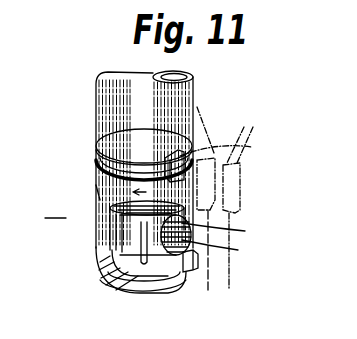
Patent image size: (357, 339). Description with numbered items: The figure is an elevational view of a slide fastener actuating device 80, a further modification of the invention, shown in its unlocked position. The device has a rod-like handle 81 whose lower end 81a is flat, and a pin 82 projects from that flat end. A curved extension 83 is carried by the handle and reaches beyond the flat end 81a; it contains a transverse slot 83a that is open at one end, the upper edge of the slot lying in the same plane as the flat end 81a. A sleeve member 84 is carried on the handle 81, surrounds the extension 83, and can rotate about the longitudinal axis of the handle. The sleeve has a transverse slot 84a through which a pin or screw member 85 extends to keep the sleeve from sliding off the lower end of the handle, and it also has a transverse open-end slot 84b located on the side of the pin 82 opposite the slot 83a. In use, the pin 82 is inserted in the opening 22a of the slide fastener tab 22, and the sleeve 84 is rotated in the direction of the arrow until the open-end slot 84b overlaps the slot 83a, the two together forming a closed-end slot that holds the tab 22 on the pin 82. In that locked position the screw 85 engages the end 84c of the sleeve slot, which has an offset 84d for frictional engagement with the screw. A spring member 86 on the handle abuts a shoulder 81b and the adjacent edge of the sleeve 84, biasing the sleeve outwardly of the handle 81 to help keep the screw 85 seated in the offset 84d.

The slide fastener actuating device 80 is at (55, 209).
The rod-like handle 81 is at (108, 97).
The lower end of the handle 81a is at (110, 230).
The shoulder 81b is at (170, 132).
The pin 82 is at (147, 268).
The curved extension 83 is at (118, 284).
The transverse slot 83a is at (98, 250).
The sleeve member 84 is at (98, 207).
The transverse slot 84a is at (96, 156).
The transverse open-end slot 84b is at (184, 262).
The end of slot 84c is at (193, 181).
The offset 84d is at (250, 147).
The pin or screw member 85 is at (96, 197).
The spring member 86 is at (180, 150).
The slide fastener tab 22 is at (245, 231).
The opening 22a is at (238, 250).